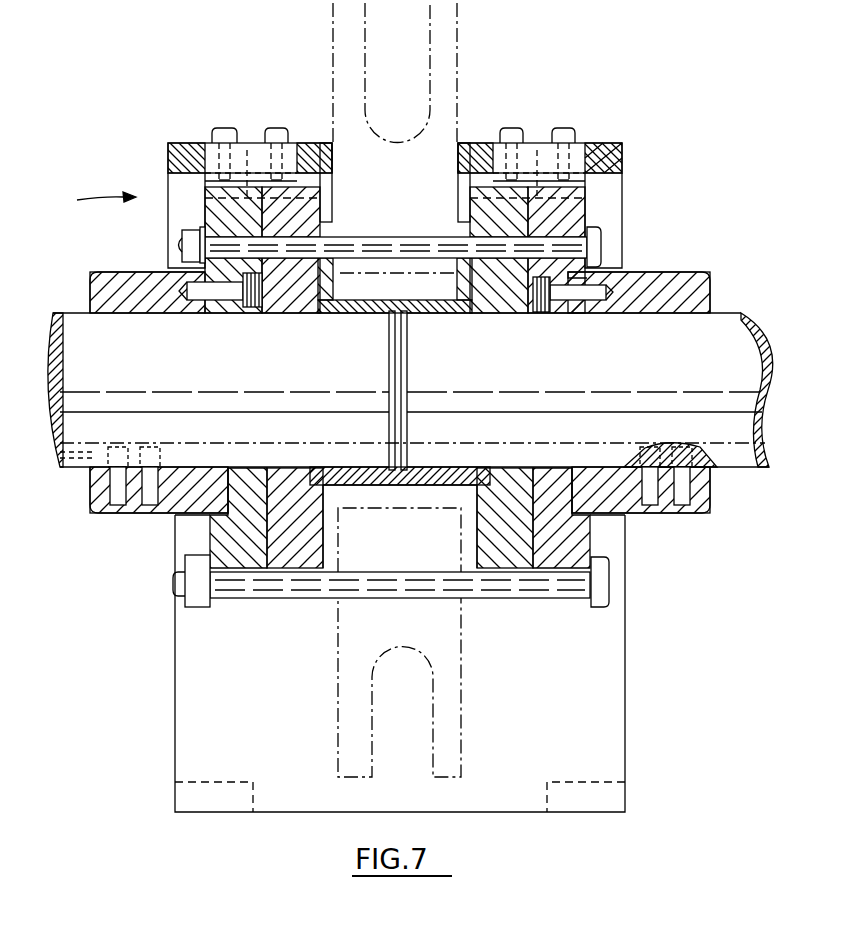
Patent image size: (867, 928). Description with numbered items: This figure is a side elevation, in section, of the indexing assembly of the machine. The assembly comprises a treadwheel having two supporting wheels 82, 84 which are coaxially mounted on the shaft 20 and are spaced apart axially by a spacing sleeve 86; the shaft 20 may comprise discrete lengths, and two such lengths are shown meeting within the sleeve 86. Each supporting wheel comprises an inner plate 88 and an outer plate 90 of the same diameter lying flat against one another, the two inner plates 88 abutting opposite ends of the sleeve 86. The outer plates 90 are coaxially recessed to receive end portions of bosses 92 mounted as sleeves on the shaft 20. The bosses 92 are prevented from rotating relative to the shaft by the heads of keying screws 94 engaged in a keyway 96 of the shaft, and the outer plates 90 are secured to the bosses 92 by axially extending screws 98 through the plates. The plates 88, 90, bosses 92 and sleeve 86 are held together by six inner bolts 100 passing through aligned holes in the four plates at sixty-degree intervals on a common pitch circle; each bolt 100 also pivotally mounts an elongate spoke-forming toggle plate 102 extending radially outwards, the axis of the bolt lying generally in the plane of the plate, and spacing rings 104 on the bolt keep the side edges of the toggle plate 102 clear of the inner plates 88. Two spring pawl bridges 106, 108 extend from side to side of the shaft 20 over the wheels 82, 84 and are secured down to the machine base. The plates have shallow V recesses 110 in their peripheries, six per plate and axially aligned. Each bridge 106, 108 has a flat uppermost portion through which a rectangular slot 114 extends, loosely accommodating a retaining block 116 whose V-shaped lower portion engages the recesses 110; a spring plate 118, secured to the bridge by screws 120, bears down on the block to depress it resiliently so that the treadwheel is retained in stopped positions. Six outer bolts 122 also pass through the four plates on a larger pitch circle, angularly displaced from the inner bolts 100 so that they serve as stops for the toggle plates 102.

The shaft 20 is at (75, 333).
The supporting wheel 82 is at (86, 199).
The supporting wheel 84 is at (641, 182).
The spacing sleeve 86 is at (428, 474).
The inner plate 88 is at (298, 545).
The outer plate 90 is at (238, 552).
The boss 92 is at (107, 290).
The keying screw 94 is at (147, 487).
The keyway 96 is at (85, 467).
The axially extending screw 98 is at (200, 287).
The inner bolt 100 is at (397, 247).
The toggle plate 102 is at (456, 15).
The spacing ring 104 is at (332, 230).
The spring pawl bridge 106 is at (190, 155).
The spring pawl bridge 108 is at (621, 142).
The 'V' recess 110 is at (248, 165).
The rectangular slot 114 is at (497, 140).
The retaining block 116 is at (213, 157).
The spring plate 118 is at (247, 150).
The screw 120 is at (295, 106).
The outer bolt 122 is at (378, 578).